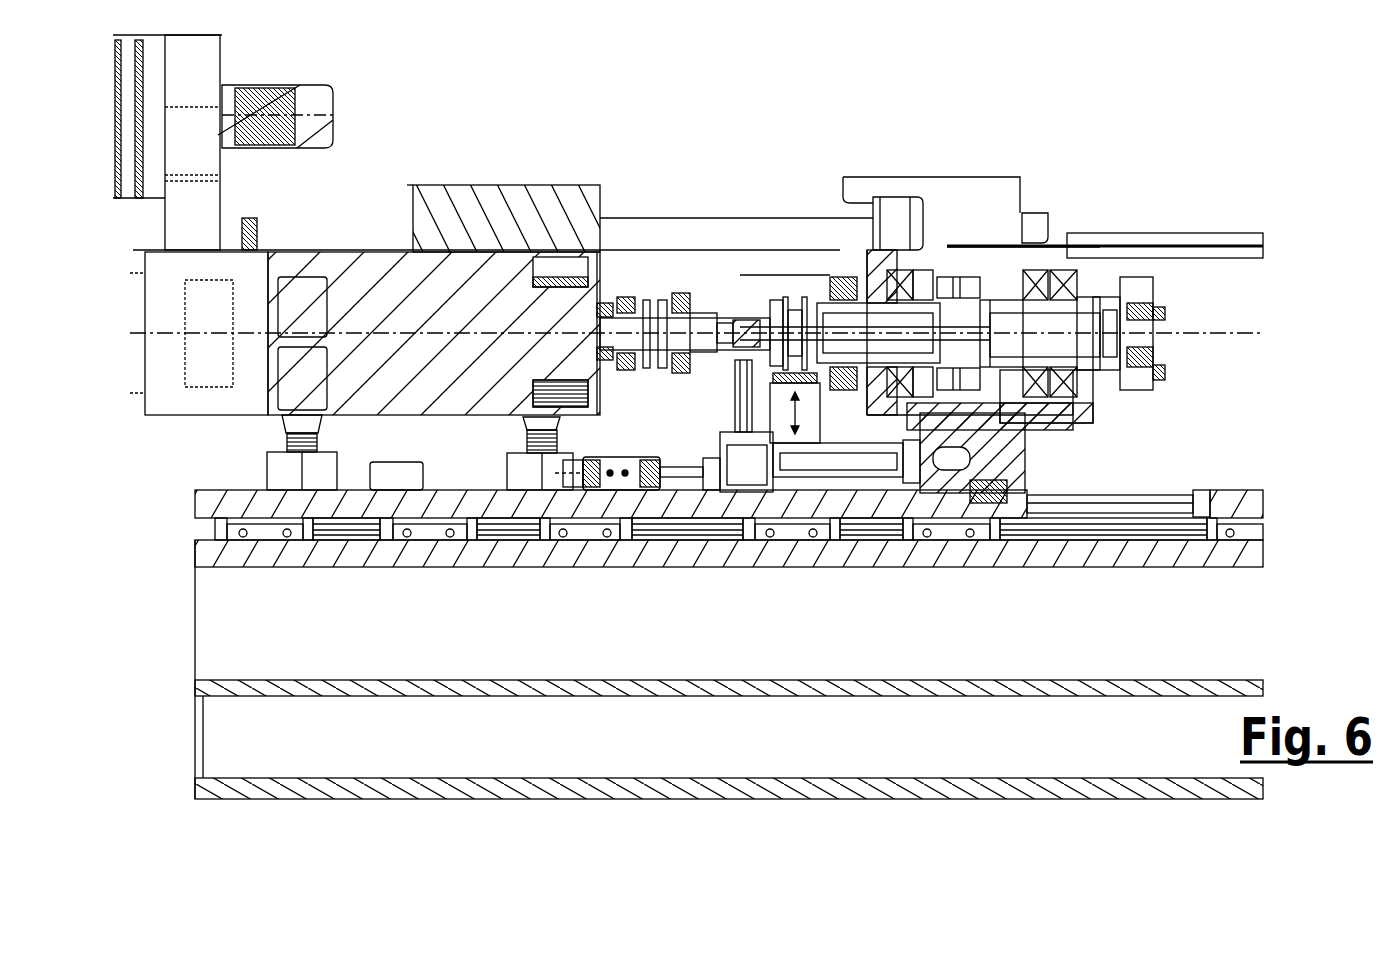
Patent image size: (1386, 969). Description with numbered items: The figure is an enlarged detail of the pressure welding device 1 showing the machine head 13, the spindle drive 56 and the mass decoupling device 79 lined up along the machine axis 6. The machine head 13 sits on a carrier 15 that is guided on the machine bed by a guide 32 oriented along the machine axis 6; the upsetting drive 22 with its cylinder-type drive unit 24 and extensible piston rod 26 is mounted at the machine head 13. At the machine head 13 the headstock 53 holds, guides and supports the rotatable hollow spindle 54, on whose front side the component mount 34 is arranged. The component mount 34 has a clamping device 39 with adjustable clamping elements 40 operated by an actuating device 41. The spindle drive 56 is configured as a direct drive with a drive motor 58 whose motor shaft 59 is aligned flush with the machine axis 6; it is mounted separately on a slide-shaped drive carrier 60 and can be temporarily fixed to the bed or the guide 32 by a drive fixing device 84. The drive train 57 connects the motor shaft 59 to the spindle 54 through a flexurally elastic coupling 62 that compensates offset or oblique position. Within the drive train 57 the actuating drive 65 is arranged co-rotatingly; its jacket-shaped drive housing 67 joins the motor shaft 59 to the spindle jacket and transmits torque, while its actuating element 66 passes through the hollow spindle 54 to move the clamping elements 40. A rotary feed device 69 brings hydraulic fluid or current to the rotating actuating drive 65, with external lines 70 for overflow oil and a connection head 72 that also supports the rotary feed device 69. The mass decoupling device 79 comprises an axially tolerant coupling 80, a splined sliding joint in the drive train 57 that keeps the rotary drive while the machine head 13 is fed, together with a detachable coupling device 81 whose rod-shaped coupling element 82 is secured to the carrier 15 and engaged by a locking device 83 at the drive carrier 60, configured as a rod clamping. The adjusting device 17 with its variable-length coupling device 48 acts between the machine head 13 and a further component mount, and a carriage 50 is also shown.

The pressure welding device 1 is at (1270, 177).
The machine axis 6 is at (1257, 333).
The machine head 13 is at (908, 177).
The carrier 15 is at (942, 512).
The adjusting device 17 is at (1118, 473).
The upsetting drive 22 is at (1040, 253).
The drive unit 24 is at (1033, 225).
The piston rod 26 is at (1216, 233).
The guide 32 is at (1170, 533).
The component mount 34 is at (1107, 295).
The clamping device 39 is at (1140, 277).
The clamping element 40 is at (1165, 382).
The actuating device 41 is at (788, 298).
The coupling device 48 is at (1120, 492).
The carriage 50 is at (1083, 505).
The headstock 53 is at (1017, 280).
The spindle 54 is at (995, 368).
The spindle drive 56 is at (434, 262).
The drive train 57 is at (706, 300).
The drive motor 58 is at (352, 282).
The motor shaft 59 is at (610, 300).
The drive carrier 60 is at (432, 495).
The coupling 62 is at (690, 368).
The actuating drive 65 is at (797, 249).
The actuating element 66 is at (868, 290).
The drive housing 67 is at (831, 292).
The rotary feed device 69 is at (738, 307).
The external lines 70 is at (887, 470).
The connection head 72 is at (727, 493).
The mass decoupling device 79 is at (778, 503).
The axially tolerant coupling 80 is at (648, 300).
The coupling device 81 is at (690, 482).
The coupling element 82 is at (677, 467).
The locking device 83 is at (625, 487).
The drive fixing device 84 is at (383, 473).